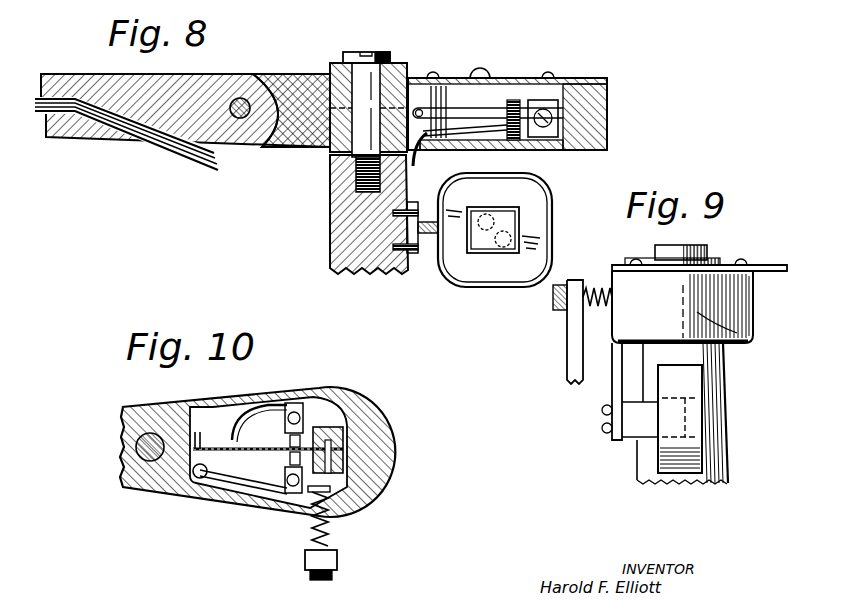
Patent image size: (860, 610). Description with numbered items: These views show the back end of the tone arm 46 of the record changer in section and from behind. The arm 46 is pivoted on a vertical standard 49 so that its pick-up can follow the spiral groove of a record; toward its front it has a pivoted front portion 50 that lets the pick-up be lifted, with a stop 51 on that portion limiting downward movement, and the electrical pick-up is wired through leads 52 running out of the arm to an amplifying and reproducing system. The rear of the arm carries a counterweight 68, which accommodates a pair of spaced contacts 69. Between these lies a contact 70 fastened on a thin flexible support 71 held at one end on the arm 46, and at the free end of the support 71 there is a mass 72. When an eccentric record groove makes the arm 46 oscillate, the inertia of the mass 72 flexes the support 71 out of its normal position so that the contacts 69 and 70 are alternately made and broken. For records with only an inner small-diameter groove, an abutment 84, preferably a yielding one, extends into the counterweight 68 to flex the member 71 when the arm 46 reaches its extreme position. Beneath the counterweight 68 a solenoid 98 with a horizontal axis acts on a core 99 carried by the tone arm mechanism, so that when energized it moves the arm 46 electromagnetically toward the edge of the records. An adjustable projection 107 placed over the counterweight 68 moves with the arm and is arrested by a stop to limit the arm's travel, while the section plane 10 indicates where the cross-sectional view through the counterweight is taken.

In FIG. 8, the section plane 10— 10 is at (313, 148).
In FIG. 8, the arm 46 is at (292, 78).
In FIG. 10, the arm 46 is at (130, 410).
In FIG. 8, the vertical standard 49 is at (345, 225).
In FIG. 9, the vertical standard 49 is at (710, 418).
In FIG. 8, the pivoted front portion 50 is at (210, 86).
In FIG. 8, the stop 51 is at (272, 148).
In FIG. 8, the leads 52 is at (167, 150).
In FIG. 8, the counterweight 68 is at (608, 98).
In FIG. 9, the counterweight 68 is at (737, 347).
In FIG. 10, the counterweight 68 is at (373, 427).
In FIG. 10, the spaced contacts 69 is at (310, 430).
In FIG. 8, the contact 70 is at (516, 108).
In FIG. 10, the contact 70 is at (253, 462).
In FIG. 8, the thin flexible support 71 is at (458, 108).
In FIG. 10, the thin flexible support 71 is at (247, 455).
In FIG. 8, the mass 72 is at (558, 150).
In FIG. 10, the mass 72 is at (380, 487).
In FIG. 9, the abutment 84 is at (603, 312).
In FIG. 10, the abutment 84 is at (357, 510).
In FIG. 8, the solenoid 98 is at (518, 268).
In FIG. 9, the solenoid 98 is at (668, 457).
In FIG. 8, the core 99 is at (510, 224).
In FIG. 9, the core 99 is at (643, 420).
In FIG. 8, the adjustable projection 107 is at (487, 76).
In FIG. 9, the adjustable projection 107 is at (767, 266).